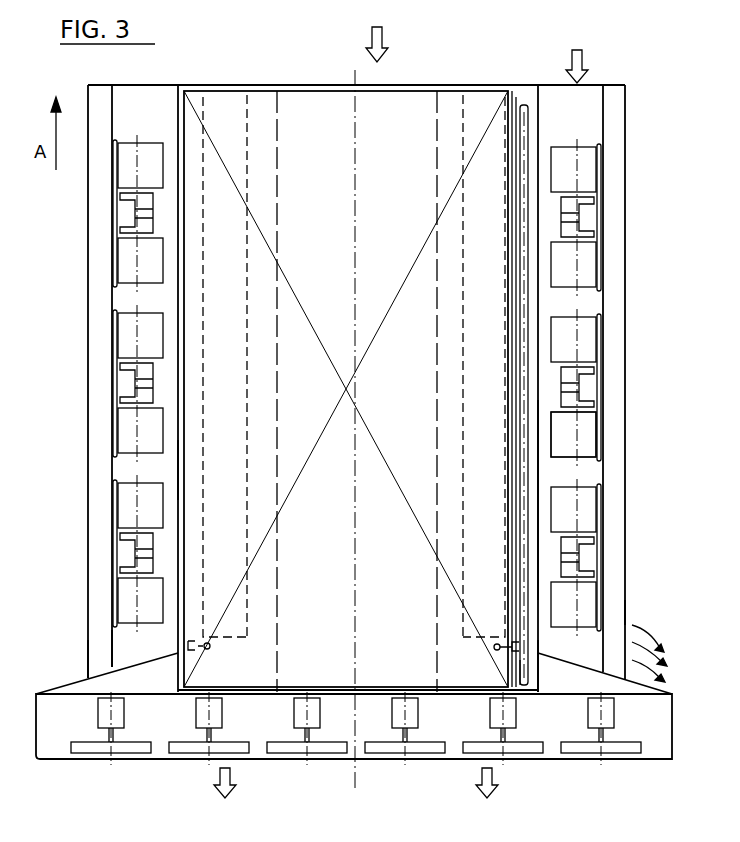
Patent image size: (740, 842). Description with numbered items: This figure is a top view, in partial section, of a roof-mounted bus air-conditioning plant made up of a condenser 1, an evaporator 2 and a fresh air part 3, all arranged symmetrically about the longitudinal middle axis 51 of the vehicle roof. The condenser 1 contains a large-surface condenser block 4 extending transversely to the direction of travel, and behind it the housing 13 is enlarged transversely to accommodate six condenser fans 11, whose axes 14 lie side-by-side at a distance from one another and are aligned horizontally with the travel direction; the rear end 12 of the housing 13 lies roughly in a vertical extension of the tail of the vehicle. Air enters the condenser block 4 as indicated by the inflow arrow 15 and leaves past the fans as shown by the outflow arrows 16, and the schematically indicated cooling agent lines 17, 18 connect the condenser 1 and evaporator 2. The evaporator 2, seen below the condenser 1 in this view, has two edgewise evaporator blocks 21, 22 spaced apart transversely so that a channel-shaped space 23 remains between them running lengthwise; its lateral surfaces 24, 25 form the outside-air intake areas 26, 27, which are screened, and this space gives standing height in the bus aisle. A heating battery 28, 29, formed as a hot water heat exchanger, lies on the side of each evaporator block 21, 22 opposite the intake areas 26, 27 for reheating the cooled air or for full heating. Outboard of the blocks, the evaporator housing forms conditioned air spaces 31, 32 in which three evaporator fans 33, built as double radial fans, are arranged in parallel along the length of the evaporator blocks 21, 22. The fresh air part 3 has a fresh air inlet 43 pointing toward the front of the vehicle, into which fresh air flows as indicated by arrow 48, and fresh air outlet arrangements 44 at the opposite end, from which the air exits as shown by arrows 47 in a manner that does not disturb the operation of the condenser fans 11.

The condenser 1 is at (547, 510).
The evaporator 2 is at (118, 446).
The fresh air part 3 is at (80, 512).
The condenser block 4 is at (405, 260).
The condenser fans 11 is at (100, 752).
The rear end 12 is at (665, 762).
The housing 13 is at (684, 722).
The axes of the condenser fans 14 is at (100, 710).
The inflow arrow 15 is at (383, 38).
The outflow arrows 16 is at (226, 785).
The cooling agent line 17 is at (540, 656).
The cooling agent line 18 is at (540, 652).
The evaporator block 21 is at (230, 301).
The evaporator block 22 is at (480, 305).
The channel-shaped space 23 is at (448, 494).
The lateral surface 24 is at (277, 331).
The lateral surface 25 is at (440, 358).
The intake area 26 is at (262, 110).
The intake area 27 is at (447, 100).
The heating battery 28 is at (193, 471).
The heating battery 29 is at (512, 466).
The conditioned air space 31 is at (135, 646).
The conditioned air space 32 is at (568, 650).
The evaporator fans 33 is at (127, 263).
The fresh air inlet 43 is at (558, 86).
The fresh air outlet arrangements 44 is at (637, 616).
The arrows 47 is at (668, 660).
The arrow 48 is at (580, 62).
The longitudinal middle axis 51 is at (355, 72).